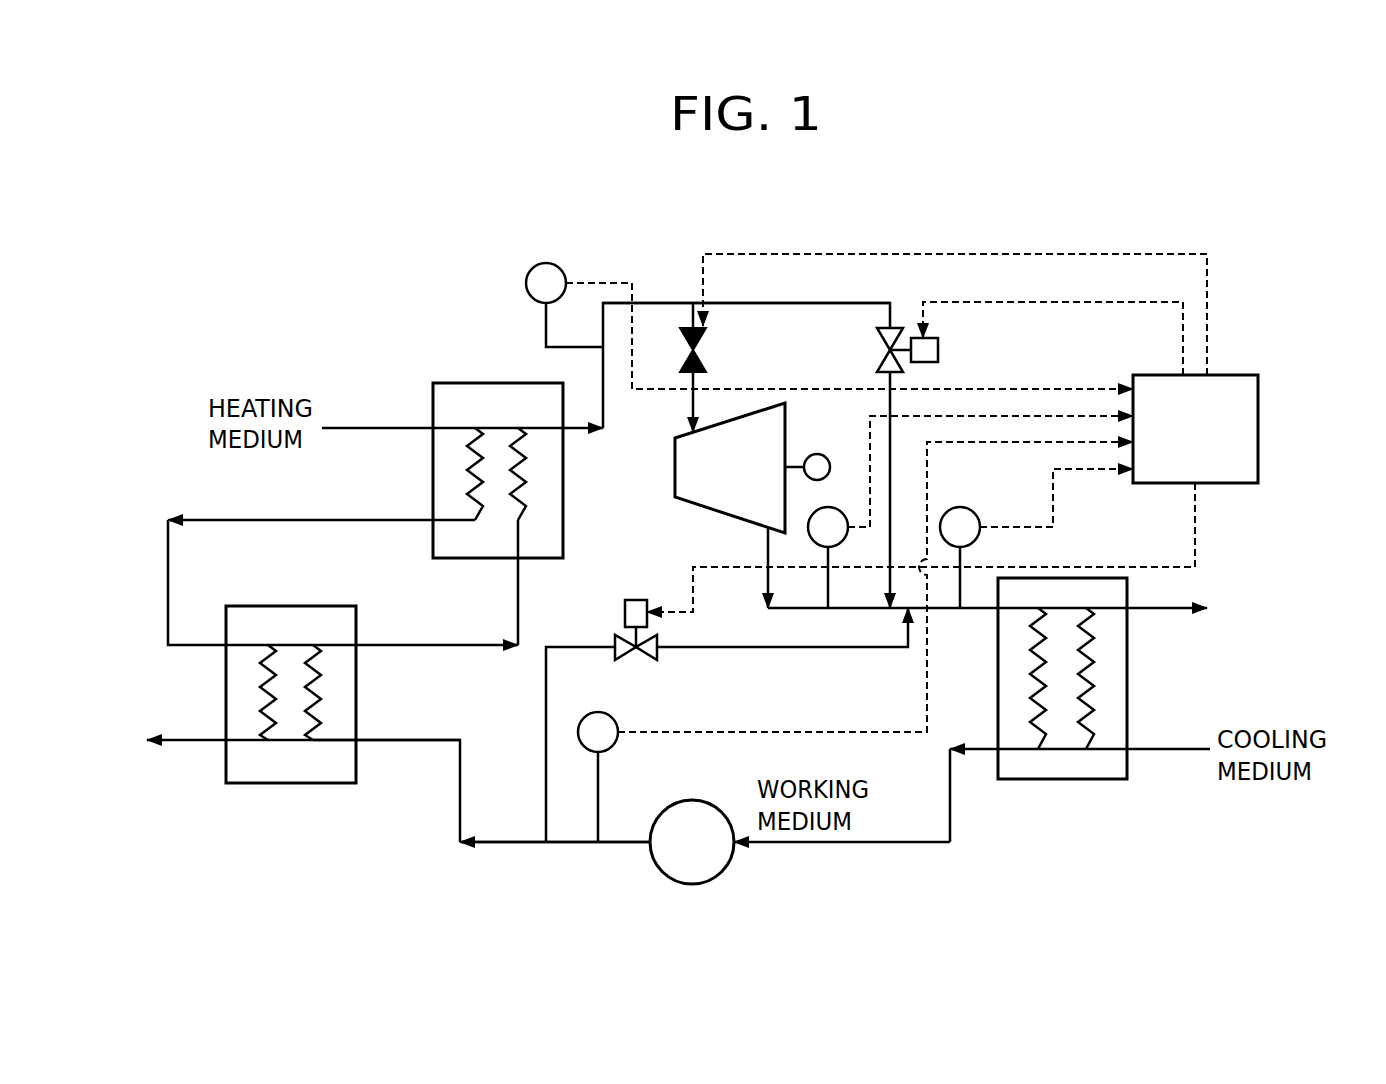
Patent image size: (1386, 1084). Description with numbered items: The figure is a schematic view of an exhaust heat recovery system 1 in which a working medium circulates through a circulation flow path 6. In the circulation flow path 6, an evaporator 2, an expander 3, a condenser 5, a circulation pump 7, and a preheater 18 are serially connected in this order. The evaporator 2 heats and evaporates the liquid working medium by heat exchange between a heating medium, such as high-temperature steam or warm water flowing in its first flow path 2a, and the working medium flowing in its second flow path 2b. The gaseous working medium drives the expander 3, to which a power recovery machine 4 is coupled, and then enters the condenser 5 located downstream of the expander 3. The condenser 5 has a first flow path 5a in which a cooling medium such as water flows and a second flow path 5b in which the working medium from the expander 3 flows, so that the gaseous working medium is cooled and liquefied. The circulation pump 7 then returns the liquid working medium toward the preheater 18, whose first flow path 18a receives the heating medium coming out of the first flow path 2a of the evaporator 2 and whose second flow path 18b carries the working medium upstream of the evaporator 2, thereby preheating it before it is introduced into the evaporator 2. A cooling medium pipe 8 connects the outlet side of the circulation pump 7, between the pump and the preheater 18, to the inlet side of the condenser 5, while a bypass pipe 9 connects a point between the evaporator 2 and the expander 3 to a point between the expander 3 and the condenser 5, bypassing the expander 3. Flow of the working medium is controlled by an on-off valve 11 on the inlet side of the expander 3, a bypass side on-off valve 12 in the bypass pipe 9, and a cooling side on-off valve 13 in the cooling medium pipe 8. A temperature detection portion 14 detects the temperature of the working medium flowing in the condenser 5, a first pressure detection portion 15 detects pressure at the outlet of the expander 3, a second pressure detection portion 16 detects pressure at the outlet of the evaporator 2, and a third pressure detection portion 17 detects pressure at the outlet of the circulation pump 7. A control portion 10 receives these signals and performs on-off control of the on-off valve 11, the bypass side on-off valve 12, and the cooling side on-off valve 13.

The exhaust heat recovery system 1 is at (1238, 262).
The evaporator 2 is at (490, 383).
The first flow path 2a is at (475, 476).
The second flow path 2b is at (520, 478).
The expander 3 is at (675, 448).
The power recovery machine 4 is at (818, 454).
The condenser 5 is at (1127, 590).
The first flow path 5a is at (1086, 666).
The second flow path 5b is at (1038, 665).
The circulation flow path 6 is at (510, 844).
The circulation pump 7 is at (697, 800).
The cooling medium pipe 8 is at (546, 690).
The bypass pipe 9 is at (838, 303).
The control portion 10 is at (1230, 375).
The on-off valve 11 is at (706, 355).
The bypass side on-off valve 12 is at (938, 348).
The cooling side on-off valve 13 is at (643, 600).
The temperature detection portion 14 is at (963, 507).
The first pressure detection portion 15 is at (833, 507).
The second pressure detection portion 16 is at (548, 262).
The third pressure detection portion 17 is at (602, 712).
The preheater 18 is at (288, 606).
The first flow path 18a is at (268, 690).
The second flow path 18b is at (313, 690).